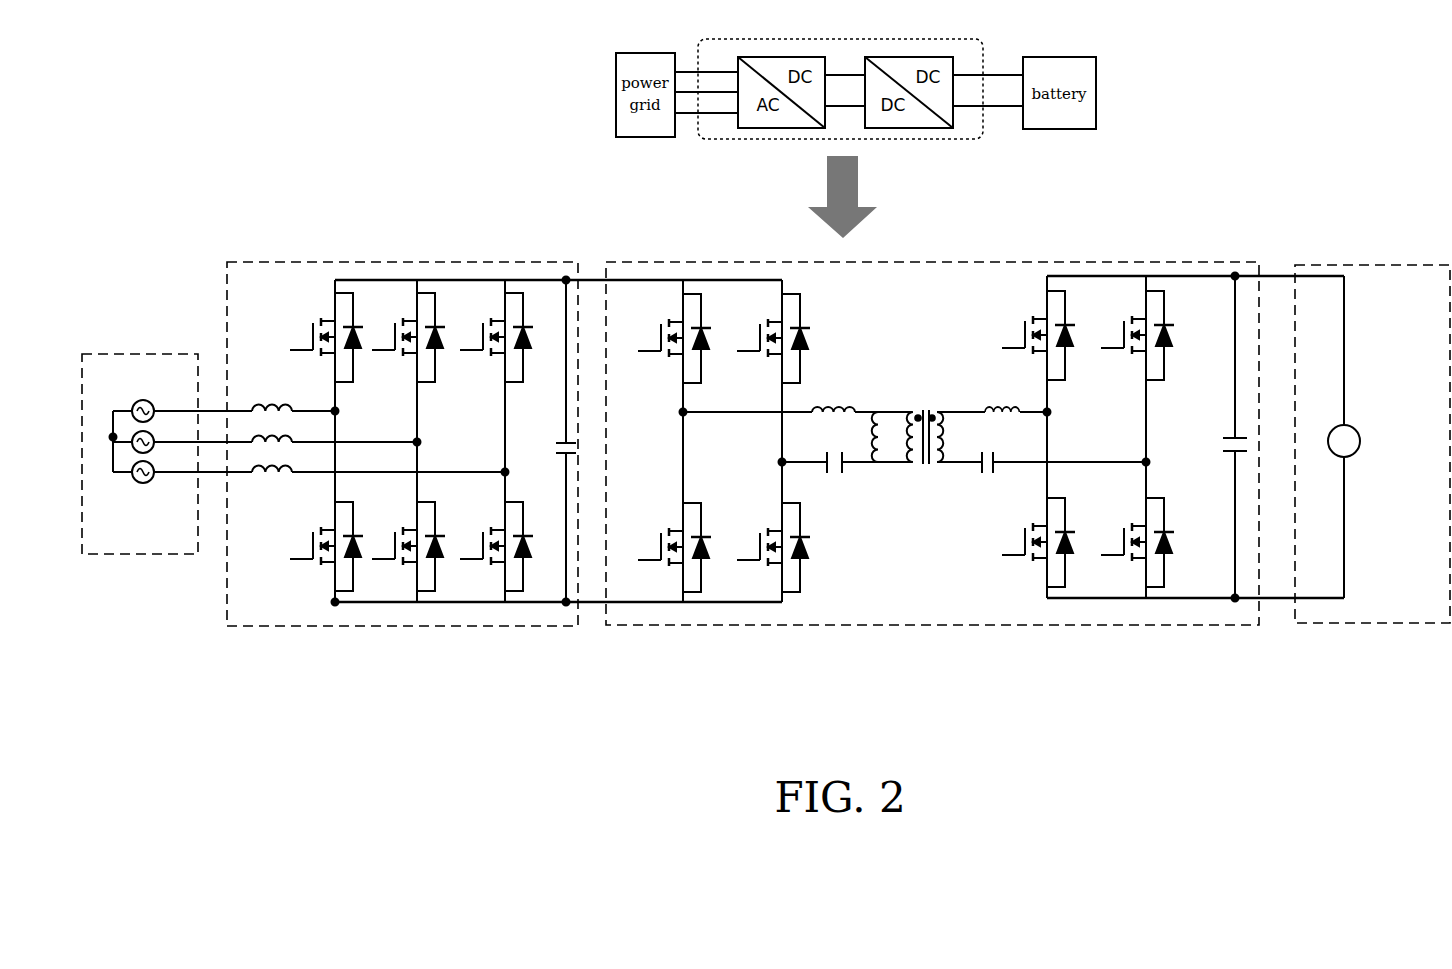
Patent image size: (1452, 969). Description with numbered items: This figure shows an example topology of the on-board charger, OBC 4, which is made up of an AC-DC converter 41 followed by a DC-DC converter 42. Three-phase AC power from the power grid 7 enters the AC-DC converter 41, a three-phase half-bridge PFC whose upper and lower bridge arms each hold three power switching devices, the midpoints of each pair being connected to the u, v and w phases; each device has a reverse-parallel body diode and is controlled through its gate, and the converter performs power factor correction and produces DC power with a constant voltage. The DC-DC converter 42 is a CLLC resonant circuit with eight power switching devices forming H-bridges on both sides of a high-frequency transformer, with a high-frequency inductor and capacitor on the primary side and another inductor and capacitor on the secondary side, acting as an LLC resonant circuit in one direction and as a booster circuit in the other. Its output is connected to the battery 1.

The OBC 4 is at (379, 230).
The power grid 7 is at (158, 556).
The AC-DC converter 41 is at (353, 628).
The DC-DC converter 42 is at (839, 627).
The battery 1 is at (1354, 626).